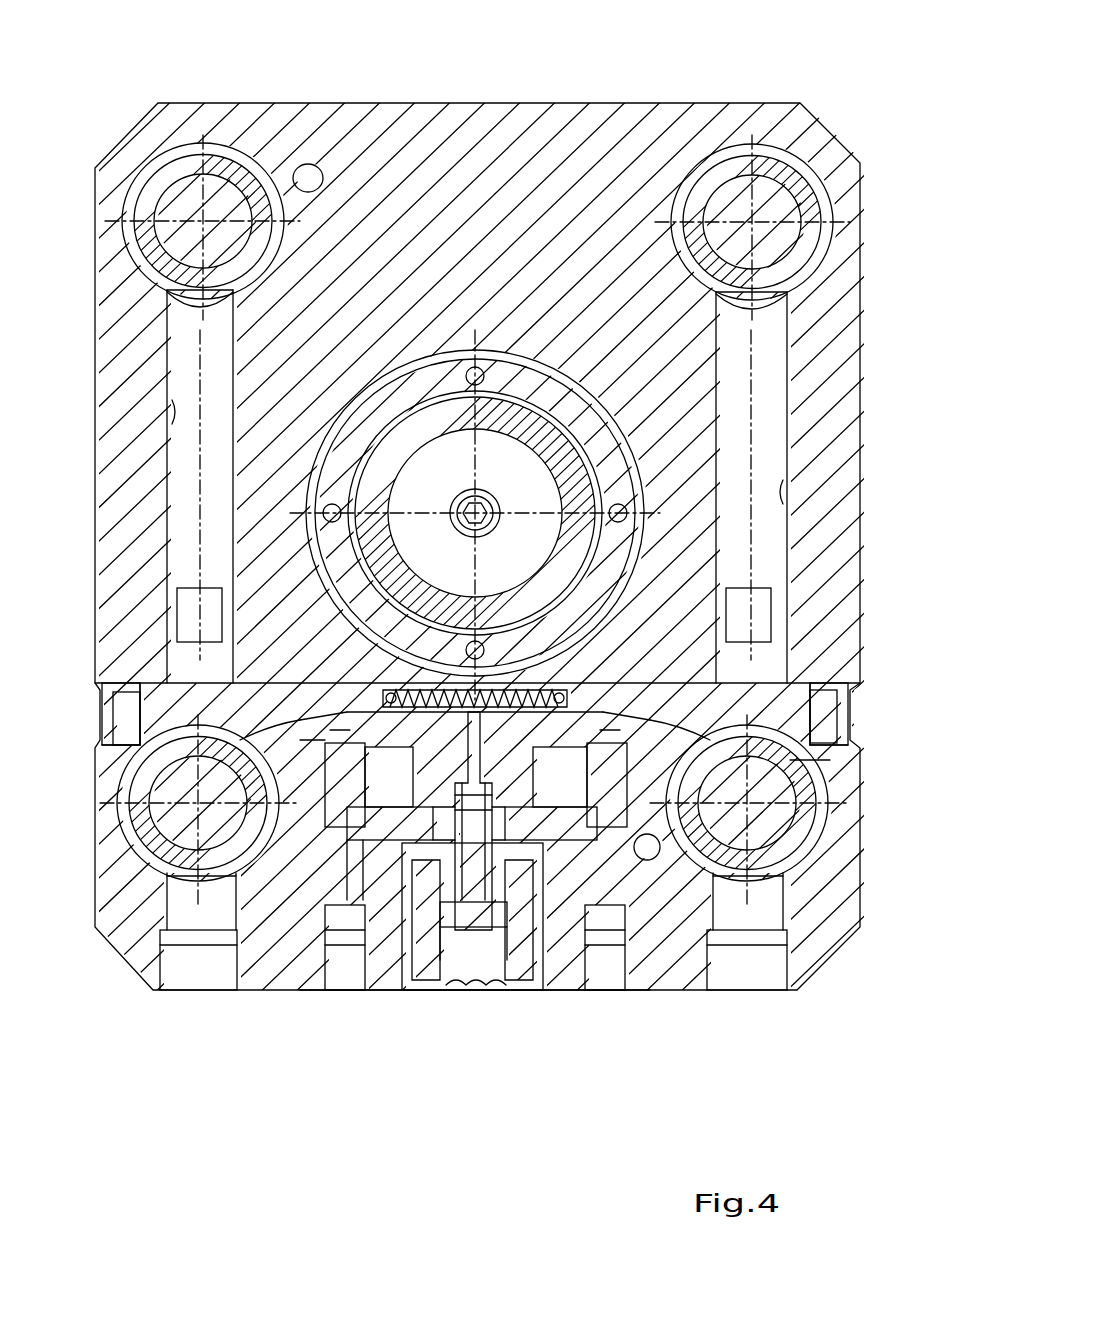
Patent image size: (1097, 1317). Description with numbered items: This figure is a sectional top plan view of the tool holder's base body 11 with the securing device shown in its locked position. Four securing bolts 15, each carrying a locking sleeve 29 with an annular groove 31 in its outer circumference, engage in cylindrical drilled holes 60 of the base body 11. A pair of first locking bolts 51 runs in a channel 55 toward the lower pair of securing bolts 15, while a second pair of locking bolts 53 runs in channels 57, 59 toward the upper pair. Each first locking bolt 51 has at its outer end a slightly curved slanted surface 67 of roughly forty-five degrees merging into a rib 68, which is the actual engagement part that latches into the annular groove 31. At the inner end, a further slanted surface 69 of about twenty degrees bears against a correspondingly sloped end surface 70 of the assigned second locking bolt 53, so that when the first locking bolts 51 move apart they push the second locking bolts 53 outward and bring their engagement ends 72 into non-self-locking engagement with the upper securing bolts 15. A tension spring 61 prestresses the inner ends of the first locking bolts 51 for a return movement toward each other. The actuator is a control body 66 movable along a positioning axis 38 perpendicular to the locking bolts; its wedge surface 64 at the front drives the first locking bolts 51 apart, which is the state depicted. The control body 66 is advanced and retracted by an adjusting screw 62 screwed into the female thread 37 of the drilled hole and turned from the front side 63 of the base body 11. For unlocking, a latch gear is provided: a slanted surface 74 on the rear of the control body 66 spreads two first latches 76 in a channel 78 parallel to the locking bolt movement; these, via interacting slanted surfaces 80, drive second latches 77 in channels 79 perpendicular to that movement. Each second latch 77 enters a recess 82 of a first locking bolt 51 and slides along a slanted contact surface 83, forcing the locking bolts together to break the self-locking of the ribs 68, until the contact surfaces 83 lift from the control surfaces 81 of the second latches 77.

The base body 11 is at (381, 152).
The securing bolt 15 is at (190, 195).
The locking sleeve 29 is at (157, 180).
The annular groove 31 is at (150, 195).
The cylindrical drilled hole 60 is at (255, 172).
The second locking bolt 53 is at (175, 350).
The engagement end 72 is at (192, 300).
The channel 57 is at (170, 410).
The channel 59 is at (785, 490).
The end surface 70 is at (172, 703).
The slanted surface 69 is at (140, 683).
The rib 68 is at (130, 750).
The tool spindle 37 is at (372, 532).
The first locking bolt 51 is at (365, 620).
The tension spring 61 is at (500, 690).
The control body 66 is at (497, 763).
The control surface 81 is at (414, 762).
The wedge surface 64 is at (413, 800).
The first latch 76 is at (412, 818).
The positioning axis 38 is at (460, 992).
The adjusting screw 62 is at (420, 992).
The slanted surface 74 is at (370, 855).
The channel 79 is at (350, 992).
The channel 78 is at (280, 992).
The front side 63 is at (650, 993).
The slanted surface 80 is at (345, 830).
The channel 55 is at (318, 740).
The second latch 77 is at (300, 720).
The recess 82 is at (248, 740).
The slanted contact surface 83 is at (343, 723).
The slanted surface 67 is at (805, 770).